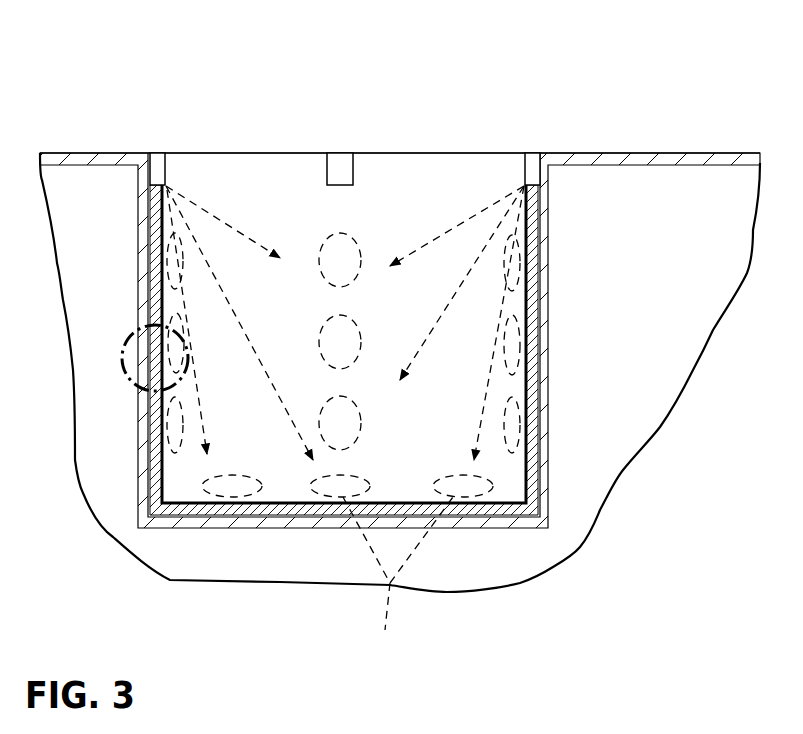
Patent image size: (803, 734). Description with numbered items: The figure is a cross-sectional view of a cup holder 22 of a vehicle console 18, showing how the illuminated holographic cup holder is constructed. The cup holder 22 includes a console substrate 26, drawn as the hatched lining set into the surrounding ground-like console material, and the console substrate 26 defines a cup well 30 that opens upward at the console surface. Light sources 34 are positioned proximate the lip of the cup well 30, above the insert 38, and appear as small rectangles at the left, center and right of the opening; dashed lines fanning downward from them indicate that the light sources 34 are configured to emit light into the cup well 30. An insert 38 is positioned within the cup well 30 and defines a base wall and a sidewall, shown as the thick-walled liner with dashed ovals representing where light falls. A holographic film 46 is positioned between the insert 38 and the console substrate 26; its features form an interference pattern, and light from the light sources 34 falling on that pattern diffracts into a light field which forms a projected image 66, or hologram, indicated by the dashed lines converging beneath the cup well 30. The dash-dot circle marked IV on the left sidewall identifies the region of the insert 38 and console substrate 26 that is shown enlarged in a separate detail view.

The console 18 is at (570, 118).
The cup holder 22 is at (246, 94).
The console substrate 26 is at (595, 226).
The cup well 30 is at (408, 180).
The light source 34 is at (160, 153).
The insert 38 is at (155, 475).
The holographic film 46 is at (410, 503).
The projected image 66 is at (398, 576).
The detail IV section indicator IV is at (122, 362).